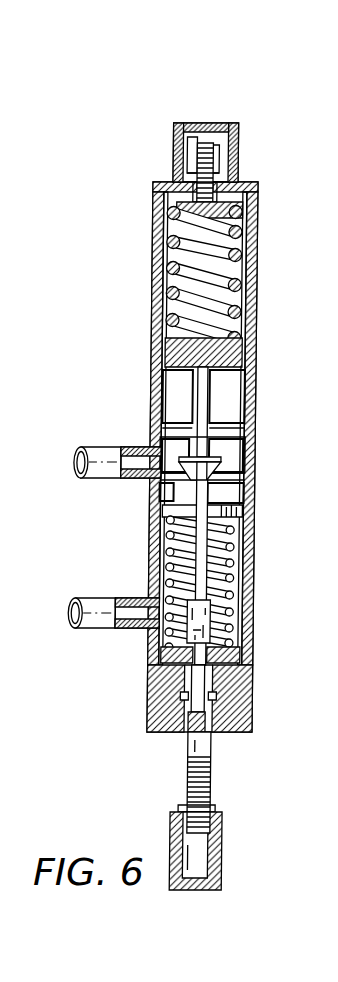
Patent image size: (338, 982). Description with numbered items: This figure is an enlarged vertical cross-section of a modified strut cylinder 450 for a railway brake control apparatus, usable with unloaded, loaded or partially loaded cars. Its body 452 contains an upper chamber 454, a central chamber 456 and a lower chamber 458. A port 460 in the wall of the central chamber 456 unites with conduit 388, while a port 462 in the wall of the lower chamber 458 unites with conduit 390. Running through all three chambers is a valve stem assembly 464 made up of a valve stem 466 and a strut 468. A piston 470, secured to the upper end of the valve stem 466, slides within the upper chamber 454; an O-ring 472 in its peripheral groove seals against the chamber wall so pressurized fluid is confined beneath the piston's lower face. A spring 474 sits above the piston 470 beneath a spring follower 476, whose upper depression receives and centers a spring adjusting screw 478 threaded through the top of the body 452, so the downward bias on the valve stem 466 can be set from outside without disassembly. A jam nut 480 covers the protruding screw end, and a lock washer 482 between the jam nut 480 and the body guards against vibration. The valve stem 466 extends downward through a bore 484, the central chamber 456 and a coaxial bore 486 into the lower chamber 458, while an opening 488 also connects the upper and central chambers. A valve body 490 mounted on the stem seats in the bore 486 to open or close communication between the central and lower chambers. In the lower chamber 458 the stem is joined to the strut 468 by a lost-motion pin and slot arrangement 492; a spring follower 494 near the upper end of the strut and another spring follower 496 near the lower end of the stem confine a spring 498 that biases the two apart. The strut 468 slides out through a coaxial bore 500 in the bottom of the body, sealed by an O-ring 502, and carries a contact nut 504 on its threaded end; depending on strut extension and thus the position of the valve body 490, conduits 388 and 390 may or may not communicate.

The strut cylinder 450 is at (231, 107).
The body 452 is at (258, 183).
The upper chamber 454 is at (246, 275).
The central chamber 456 is at (235, 448).
The lower chamber 458 is at (242, 553).
The port 460 is at (146, 447).
The port 462 is at (150, 603).
The valve stem assembly 464 is at (224, 496).
The valve stem 466 is at (208, 402).
The strut 468 is at (218, 760).
The piston 470 is at (206, 385).
The O-ring 472 is at (252, 355).
The spring 474 is at (241, 285).
The spring follower 476 is at (176, 206).
The spring adjusting screw 478 is at (213, 160).
The jam nut 480 is at (229, 130).
The lock washer 482 is at (175, 183).
The bore 484 is at (225, 428).
The bore 486 is at (163, 497).
The opening 488 is at (172, 430).
The valve body 490 is at (226, 460).
The pin and slot arrangement 492 is at (217, 630).
The spring follower 494 is at (238, 657).
The spring follower 496 is at (246, 512).
The spring 498 is at (217, 590).
The coaxial bore 500 is at (222, 716).
The O-ring 502 is at (223, 697).
The contact nut 504 is at (231, 852).
The conduit 388 is at (100, 455).
The conduit 390 is at (96, 622).